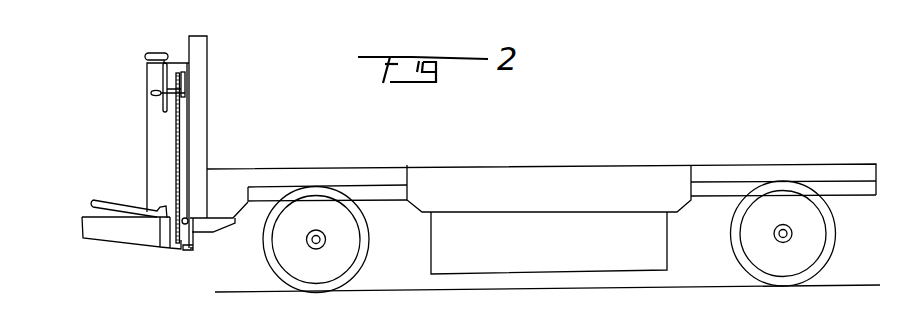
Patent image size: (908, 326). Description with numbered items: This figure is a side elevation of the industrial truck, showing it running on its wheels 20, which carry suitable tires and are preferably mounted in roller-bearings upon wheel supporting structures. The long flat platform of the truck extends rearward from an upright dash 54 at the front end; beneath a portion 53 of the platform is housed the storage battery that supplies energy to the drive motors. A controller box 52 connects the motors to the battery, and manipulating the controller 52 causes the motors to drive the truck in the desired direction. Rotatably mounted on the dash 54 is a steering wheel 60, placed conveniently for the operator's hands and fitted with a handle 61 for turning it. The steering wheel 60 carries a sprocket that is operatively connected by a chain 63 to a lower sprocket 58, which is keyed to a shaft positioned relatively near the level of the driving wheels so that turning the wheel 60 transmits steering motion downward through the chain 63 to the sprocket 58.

The wheels 20 is at (263, 240).
The controller box 52 is at (147, 117).
The portion of the platform 53 is at (560, 144).
The dash 54 is at (187, 40).
The sprocket 58 is at (178, 249).
The steering wheel 60 is at (163, 65).
The handle 61 is at (151, 93).
The chain 63 is at (176, 133).